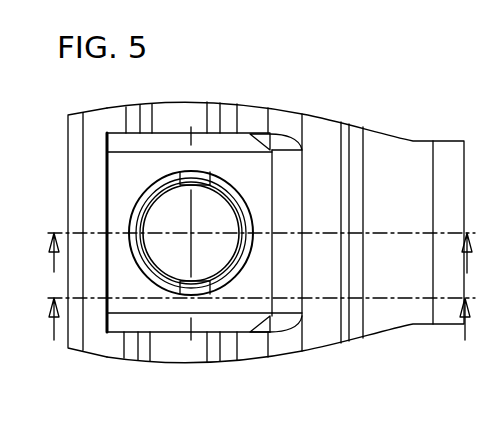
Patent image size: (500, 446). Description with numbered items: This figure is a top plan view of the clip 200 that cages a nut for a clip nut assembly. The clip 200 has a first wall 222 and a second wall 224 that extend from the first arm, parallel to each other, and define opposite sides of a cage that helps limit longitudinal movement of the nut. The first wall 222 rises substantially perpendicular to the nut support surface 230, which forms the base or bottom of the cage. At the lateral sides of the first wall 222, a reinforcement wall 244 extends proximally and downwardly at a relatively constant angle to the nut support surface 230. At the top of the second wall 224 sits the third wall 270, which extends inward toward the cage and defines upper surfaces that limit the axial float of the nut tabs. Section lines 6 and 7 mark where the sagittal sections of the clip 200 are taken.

The fan assembly 200 is at (228, 92).
The first wall 222 is at (93, 340).
The second wall 224 is at (320, 145).
The nut support surface 230 is at (252, 277).
The reinforcement wall 244 is at (112, 122).
The third wall 270 is at (265, 168).
The section line 6- 6 is at (261, 334).
The section line 7- 7 is at (262, 259).